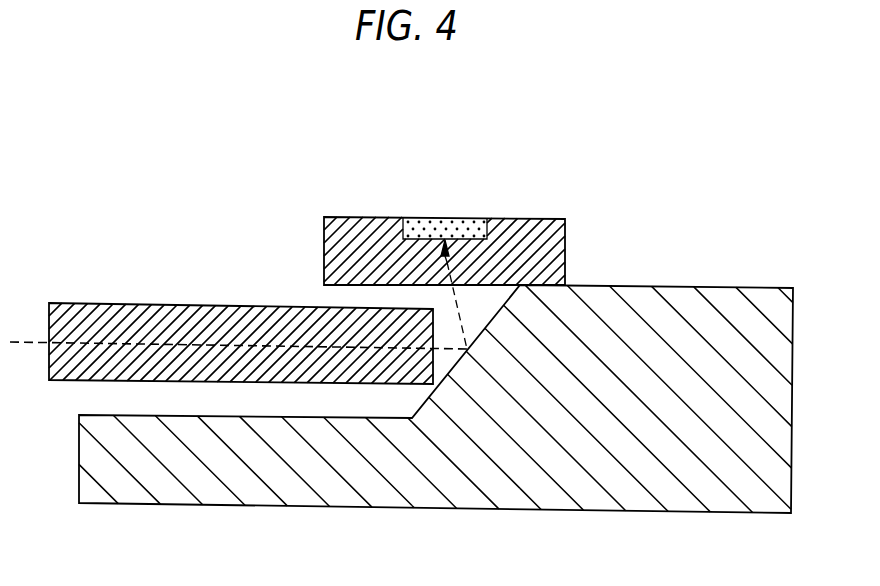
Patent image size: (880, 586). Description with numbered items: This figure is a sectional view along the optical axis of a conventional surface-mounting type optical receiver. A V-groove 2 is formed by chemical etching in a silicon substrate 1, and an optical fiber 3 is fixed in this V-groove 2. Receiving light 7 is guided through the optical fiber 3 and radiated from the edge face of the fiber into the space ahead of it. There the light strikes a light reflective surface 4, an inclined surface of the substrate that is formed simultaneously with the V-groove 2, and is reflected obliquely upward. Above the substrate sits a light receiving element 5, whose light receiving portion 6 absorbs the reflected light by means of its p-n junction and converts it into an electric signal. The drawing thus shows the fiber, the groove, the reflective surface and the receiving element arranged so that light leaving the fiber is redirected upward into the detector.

The silicon substrate 1 is at (660, 293).
The V-groove 2 is at (302, 405).
The optical fiber 3 is at (132, 302).
The light reflective surface 4 is at (453, 368).
The light receiving element 5 is at (358, 216).
The light receiving portion 6 is at (443, 216).
The receiving light 7 is at (212, 342).